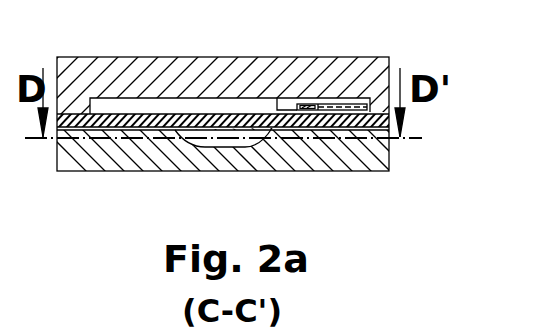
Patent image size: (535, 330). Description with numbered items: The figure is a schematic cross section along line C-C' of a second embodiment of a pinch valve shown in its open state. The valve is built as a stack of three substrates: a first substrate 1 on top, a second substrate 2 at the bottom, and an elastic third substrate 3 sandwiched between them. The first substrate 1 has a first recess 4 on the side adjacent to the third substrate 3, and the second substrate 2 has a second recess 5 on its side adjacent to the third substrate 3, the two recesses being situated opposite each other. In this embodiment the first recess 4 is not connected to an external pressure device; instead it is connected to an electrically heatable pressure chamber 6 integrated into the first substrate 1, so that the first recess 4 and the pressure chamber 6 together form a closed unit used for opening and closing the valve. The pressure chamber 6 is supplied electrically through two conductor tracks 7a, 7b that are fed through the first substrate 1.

The first substrate 1 is at (222, 76).
The second substrate 2 is at (122, 146).
The third substrate 3 is at (166, 128).
The first recess 4 is at (147, 108).
The second recess 5 is at (224, 140).
The electrically heatable pressure chamber 6 is at (284, 112).
The conductor track 7a is at (343, 59).
The conductor track 7b is at (333, 104).